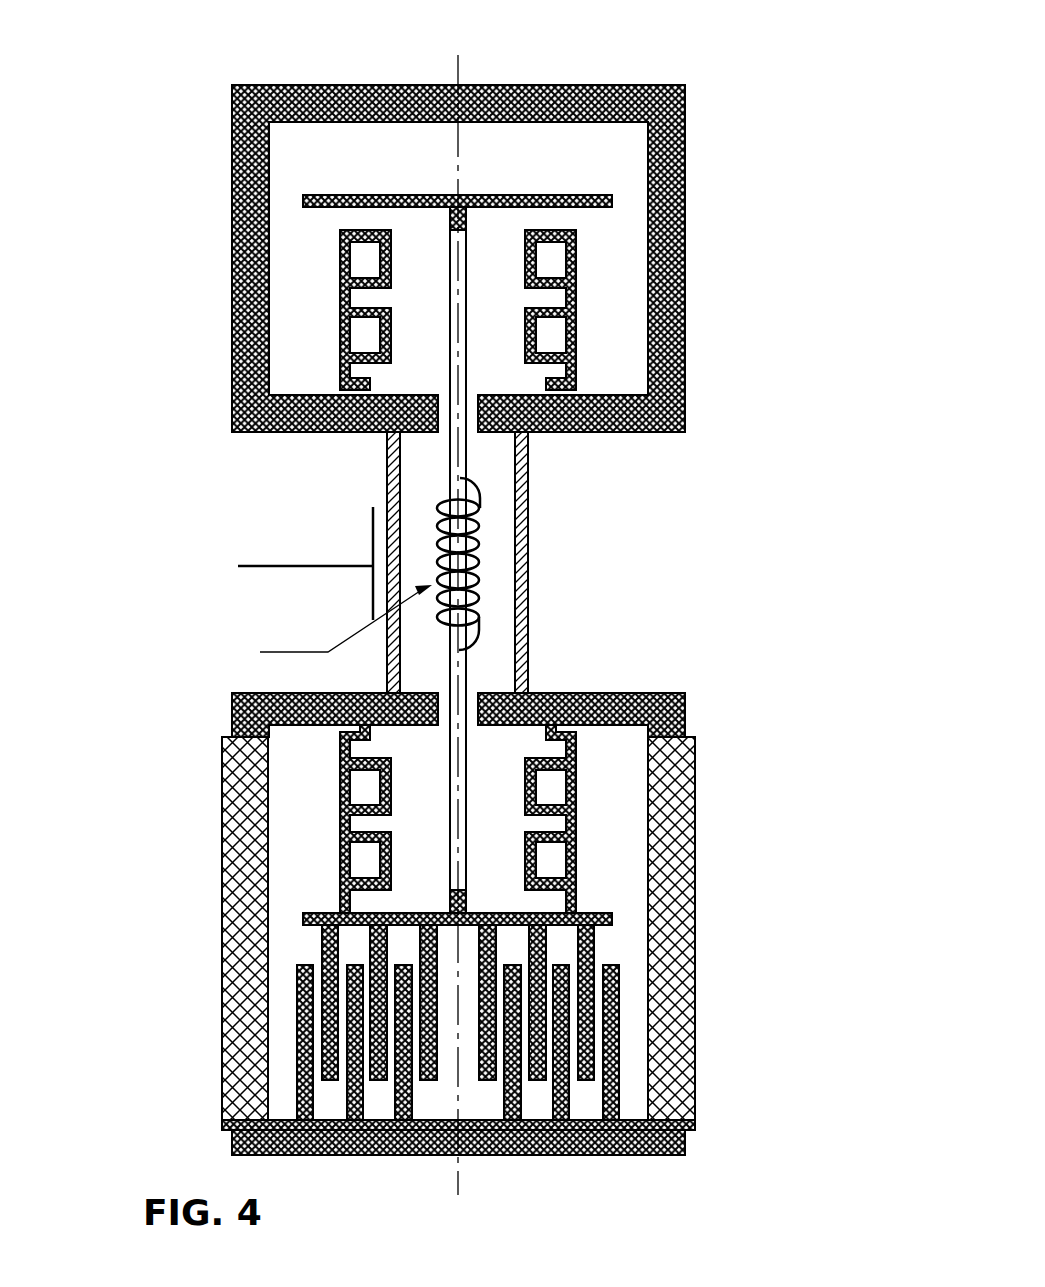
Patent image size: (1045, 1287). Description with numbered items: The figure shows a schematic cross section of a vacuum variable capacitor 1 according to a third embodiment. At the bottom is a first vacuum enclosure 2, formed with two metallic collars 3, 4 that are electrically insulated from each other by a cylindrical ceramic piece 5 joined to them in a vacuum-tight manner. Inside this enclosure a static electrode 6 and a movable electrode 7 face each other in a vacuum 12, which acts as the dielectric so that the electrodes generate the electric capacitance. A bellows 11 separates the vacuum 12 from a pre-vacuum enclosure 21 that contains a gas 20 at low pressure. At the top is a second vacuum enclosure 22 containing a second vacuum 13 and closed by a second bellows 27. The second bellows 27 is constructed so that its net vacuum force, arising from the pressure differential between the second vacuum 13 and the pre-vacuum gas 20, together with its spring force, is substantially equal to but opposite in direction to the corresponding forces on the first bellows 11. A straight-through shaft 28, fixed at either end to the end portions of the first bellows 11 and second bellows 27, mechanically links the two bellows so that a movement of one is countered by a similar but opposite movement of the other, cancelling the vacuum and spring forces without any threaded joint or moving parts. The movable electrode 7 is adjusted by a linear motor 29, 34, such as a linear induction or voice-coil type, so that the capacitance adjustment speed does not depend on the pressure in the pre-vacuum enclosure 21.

The vacuum variable capacitor 1 is at (190, 128).
The first vacuum enclosure 2 is at (185, 1000).
The metallic collar 3 is at (663, 1155).
The metallic collar 4 is at (680, 712).
The cylindrical ceramic piece 5 is at (680, 905).
The static electrode 6 is at (615, 1065).
The movable electrode 7 is at (595, 933).
The bellows 11 is at (578, 815).
The vacuum 12 is at (622, 785).
The second vacuum 13 is at (625, 243).
The gas 20 is at (410, 218).
The pre-vacuum enclosure 21 is at (528, 582).
The second vacuum enclosure 22 is at (658, 92).
The second bellows 27 is at (577, 307).
The straight-through shaft 28 is at (460, 450).
The linear motor 29 is at (328, 627).
The linear motor 34 is at (270, 565).